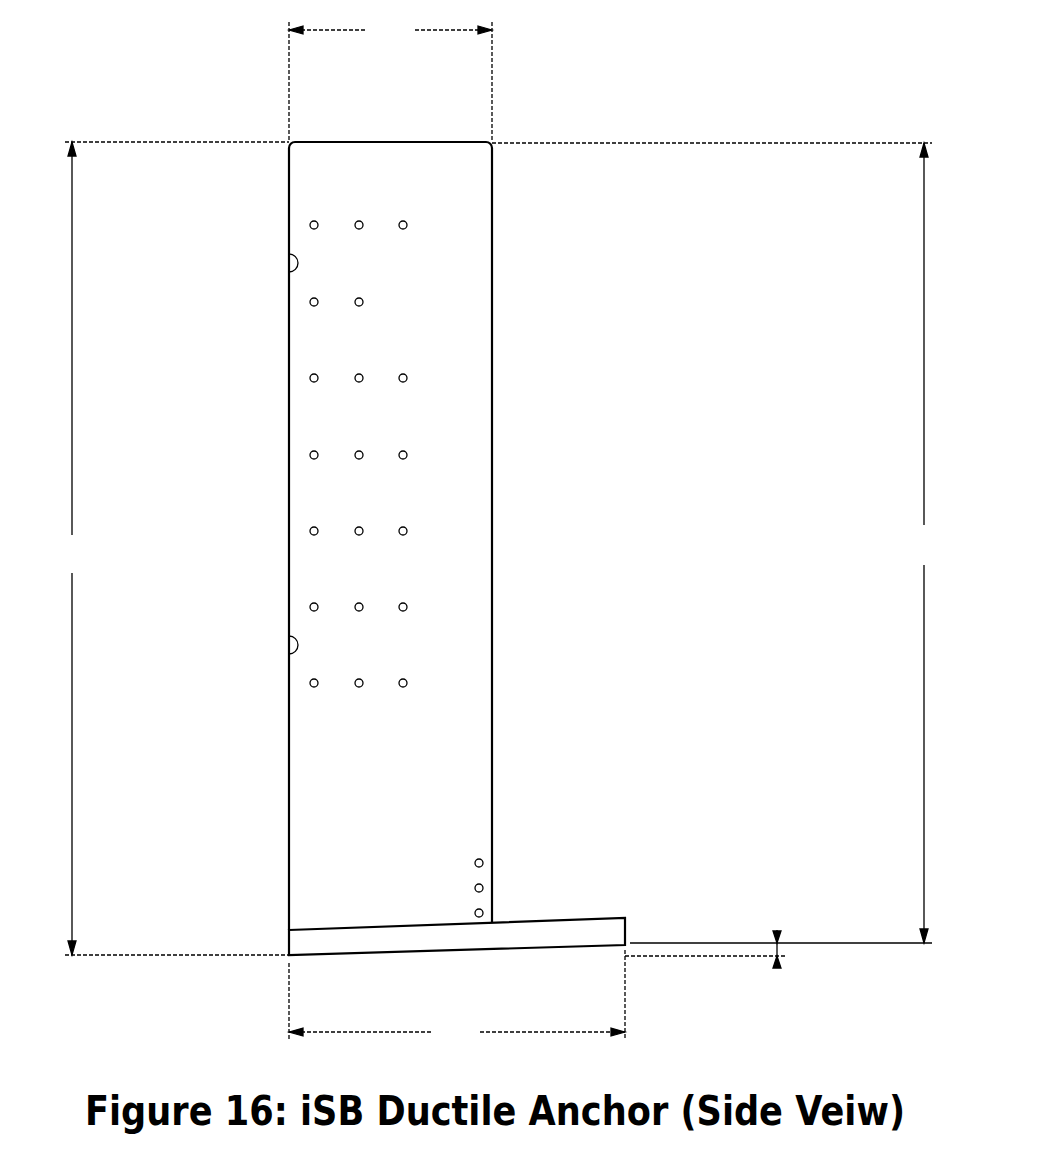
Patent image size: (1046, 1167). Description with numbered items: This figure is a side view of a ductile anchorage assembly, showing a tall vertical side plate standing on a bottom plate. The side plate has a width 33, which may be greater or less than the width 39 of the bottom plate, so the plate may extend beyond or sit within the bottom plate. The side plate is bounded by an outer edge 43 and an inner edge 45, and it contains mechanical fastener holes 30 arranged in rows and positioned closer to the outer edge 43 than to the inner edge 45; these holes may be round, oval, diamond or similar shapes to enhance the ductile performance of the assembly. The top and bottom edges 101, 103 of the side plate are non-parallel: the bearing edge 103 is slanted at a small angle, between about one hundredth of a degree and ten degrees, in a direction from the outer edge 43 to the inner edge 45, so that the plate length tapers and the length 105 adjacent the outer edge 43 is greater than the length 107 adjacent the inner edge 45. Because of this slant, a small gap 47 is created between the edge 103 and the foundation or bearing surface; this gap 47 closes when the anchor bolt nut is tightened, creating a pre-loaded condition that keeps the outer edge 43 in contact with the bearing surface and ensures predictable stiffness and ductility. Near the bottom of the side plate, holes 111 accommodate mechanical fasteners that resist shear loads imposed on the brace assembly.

The edge 101 is at (405, 130).
The mechanical fastener holes 30 is at (405, 375).
The inner edge 45 is at (527, 470).
The outer edge 43 is at (272, 662).
The holes 111 is at (485, 855).
The edge 103 is at (455, 918).
The width 33 is at (390, 78).
The length 105 is at (167, 548).
The length 107 is at (722, 543).
The gap 47 is at (732, 963).
The width 39 is at (457, 1000).